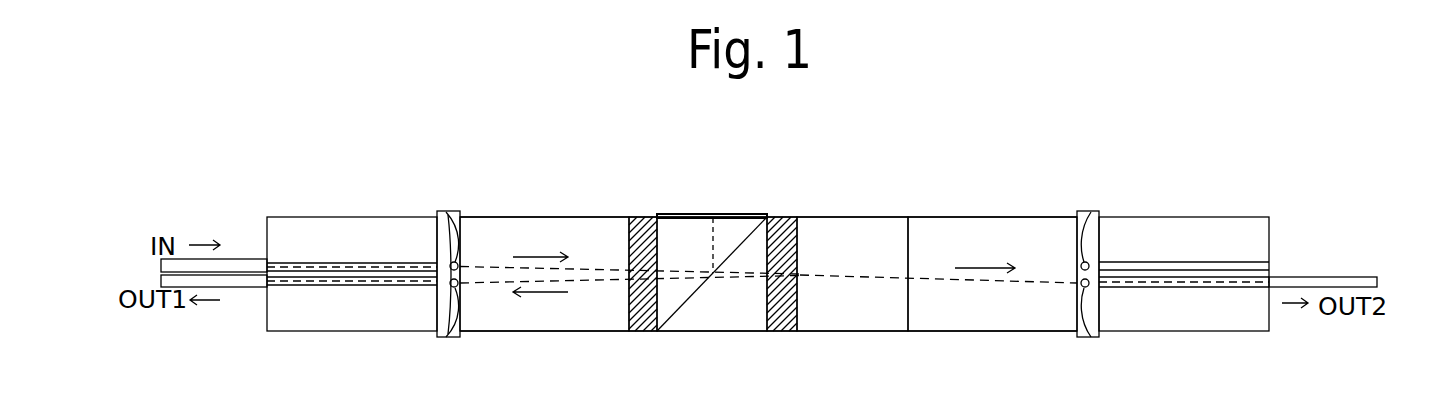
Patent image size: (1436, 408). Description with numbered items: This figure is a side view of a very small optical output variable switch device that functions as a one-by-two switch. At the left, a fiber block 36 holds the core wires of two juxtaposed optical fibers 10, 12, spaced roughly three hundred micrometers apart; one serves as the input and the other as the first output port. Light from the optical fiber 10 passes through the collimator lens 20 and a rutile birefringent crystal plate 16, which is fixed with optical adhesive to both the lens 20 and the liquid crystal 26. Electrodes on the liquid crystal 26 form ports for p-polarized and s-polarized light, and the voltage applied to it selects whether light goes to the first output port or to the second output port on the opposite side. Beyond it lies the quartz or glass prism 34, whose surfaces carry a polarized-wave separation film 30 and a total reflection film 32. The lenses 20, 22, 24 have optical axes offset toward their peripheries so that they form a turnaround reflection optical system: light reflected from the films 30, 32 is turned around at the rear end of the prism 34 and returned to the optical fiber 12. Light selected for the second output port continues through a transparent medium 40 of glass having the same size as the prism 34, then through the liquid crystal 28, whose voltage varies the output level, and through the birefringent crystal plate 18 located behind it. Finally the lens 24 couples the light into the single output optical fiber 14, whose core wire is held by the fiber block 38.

The optical fiber 10 is at (237, 258).
The optical fiber 12 is at (238, 288).
The output optical fiber 14 is at (1327, 277).
The birefringent crystal plate 16 is at (575, 217).
The birefringent crystal plate 18 is at (1015, 217).
The lens 20 is at (442, 211).
The lens 22 is at (442, 337).
The lens 24 is at (1085, 337).
The liquid crystal 26 is at (646, 217).
The liquid crystal 28 is at (782, 218).
The polarized-wave separation film 30 is at (740, 237).
The total reflection film 32 is at (697, 214).
The prism 34 is at (672, 302).
The fiber block 36 is at (334, 217).
The fiber block 38 is at (1212, 217).
The transparent medium 40 is at (882, 217).